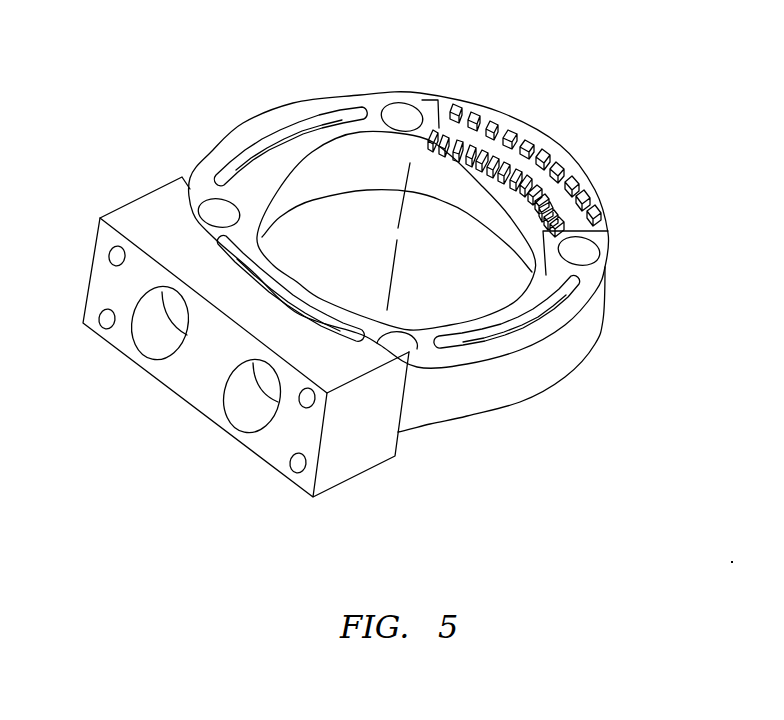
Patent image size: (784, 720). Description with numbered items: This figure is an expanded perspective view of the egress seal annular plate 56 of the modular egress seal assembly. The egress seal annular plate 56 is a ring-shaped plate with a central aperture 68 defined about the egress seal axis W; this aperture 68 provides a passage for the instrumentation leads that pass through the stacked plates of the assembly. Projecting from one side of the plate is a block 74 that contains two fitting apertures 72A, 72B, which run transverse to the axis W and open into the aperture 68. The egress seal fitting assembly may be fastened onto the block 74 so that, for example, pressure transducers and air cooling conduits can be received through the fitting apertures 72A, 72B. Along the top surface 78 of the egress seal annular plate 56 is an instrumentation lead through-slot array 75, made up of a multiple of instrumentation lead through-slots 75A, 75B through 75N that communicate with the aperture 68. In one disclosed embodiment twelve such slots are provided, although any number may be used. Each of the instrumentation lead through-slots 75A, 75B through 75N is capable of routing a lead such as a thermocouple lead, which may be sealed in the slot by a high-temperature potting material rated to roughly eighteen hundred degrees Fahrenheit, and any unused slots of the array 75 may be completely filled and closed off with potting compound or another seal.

The egress seal annular plate 56 is at (698, 176).
The aperture 68 is at (465, 268).
The fitting aperture 72A is at (167, 338).
The fitting aperture 72B is at (253, 405).
The block 74 is at (360, 474).
The instrumentation lead through-slot array 75 is at (450, 85).
The instrumentation lead through-slot 75A is at (452, 103).
The instrumentation lead through-slot 75B is at (436, 133).
The instrumentation lead through-slot 75N is at (603, 220).
The top surface 78 is at (570, 310).
The egress seal axis W is at (388, 280).